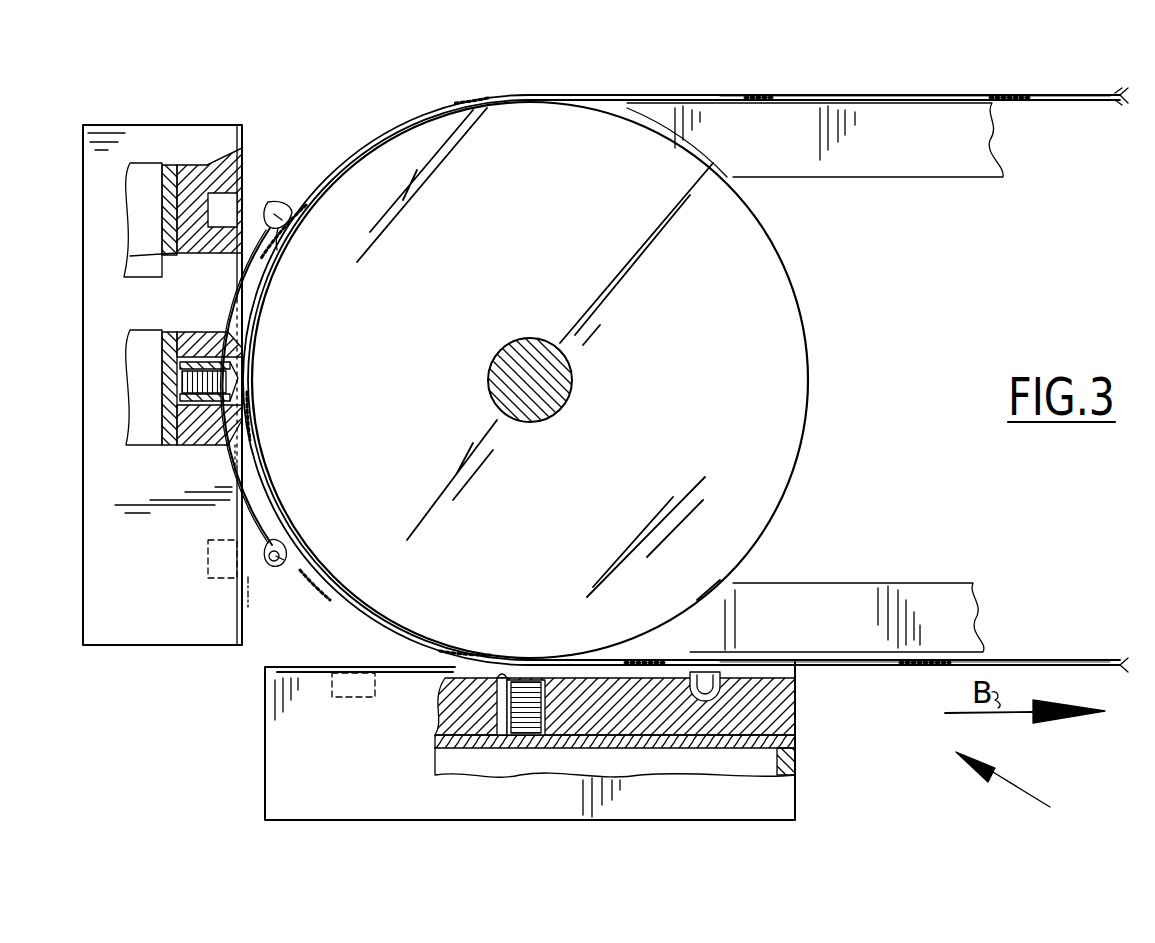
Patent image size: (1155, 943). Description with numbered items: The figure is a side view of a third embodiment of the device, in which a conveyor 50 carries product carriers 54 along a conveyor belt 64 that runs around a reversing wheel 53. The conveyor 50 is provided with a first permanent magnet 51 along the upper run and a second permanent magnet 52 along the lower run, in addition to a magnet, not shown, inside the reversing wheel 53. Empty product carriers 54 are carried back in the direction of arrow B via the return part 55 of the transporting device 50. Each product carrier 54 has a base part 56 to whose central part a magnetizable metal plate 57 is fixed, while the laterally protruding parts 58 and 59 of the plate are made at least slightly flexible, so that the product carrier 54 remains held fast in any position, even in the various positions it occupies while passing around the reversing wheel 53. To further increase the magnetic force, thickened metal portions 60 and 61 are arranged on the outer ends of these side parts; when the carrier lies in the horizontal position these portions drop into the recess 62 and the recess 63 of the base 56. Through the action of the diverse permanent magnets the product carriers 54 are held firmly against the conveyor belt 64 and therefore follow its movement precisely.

The conveyor 50 is at (1024, 796).
The first permanent magnet 51 is at (902, 158).
The second permanent magnet 52 is at (920, 595).
The reversing wheel 53 is at (410, 148).
The product carrier 54 is at (146, 130).
The return part 55 is at (1086, 650).
The base part 56 is at (242, 167).
The magnetizable metal plate 57 is at (265, 300).
The laterally protruding part 58 is at (275, 522).
The laterally protruding part 59 is at (277, 243).
The thickened metal portion 60 is at (278, 568).
The thickened metal portion 61 is at (278, 210).
The recess 62 is at (249, 585).
The recess 63 is at (227, 200).
The conveyor belt 64 is at (1097, 60).